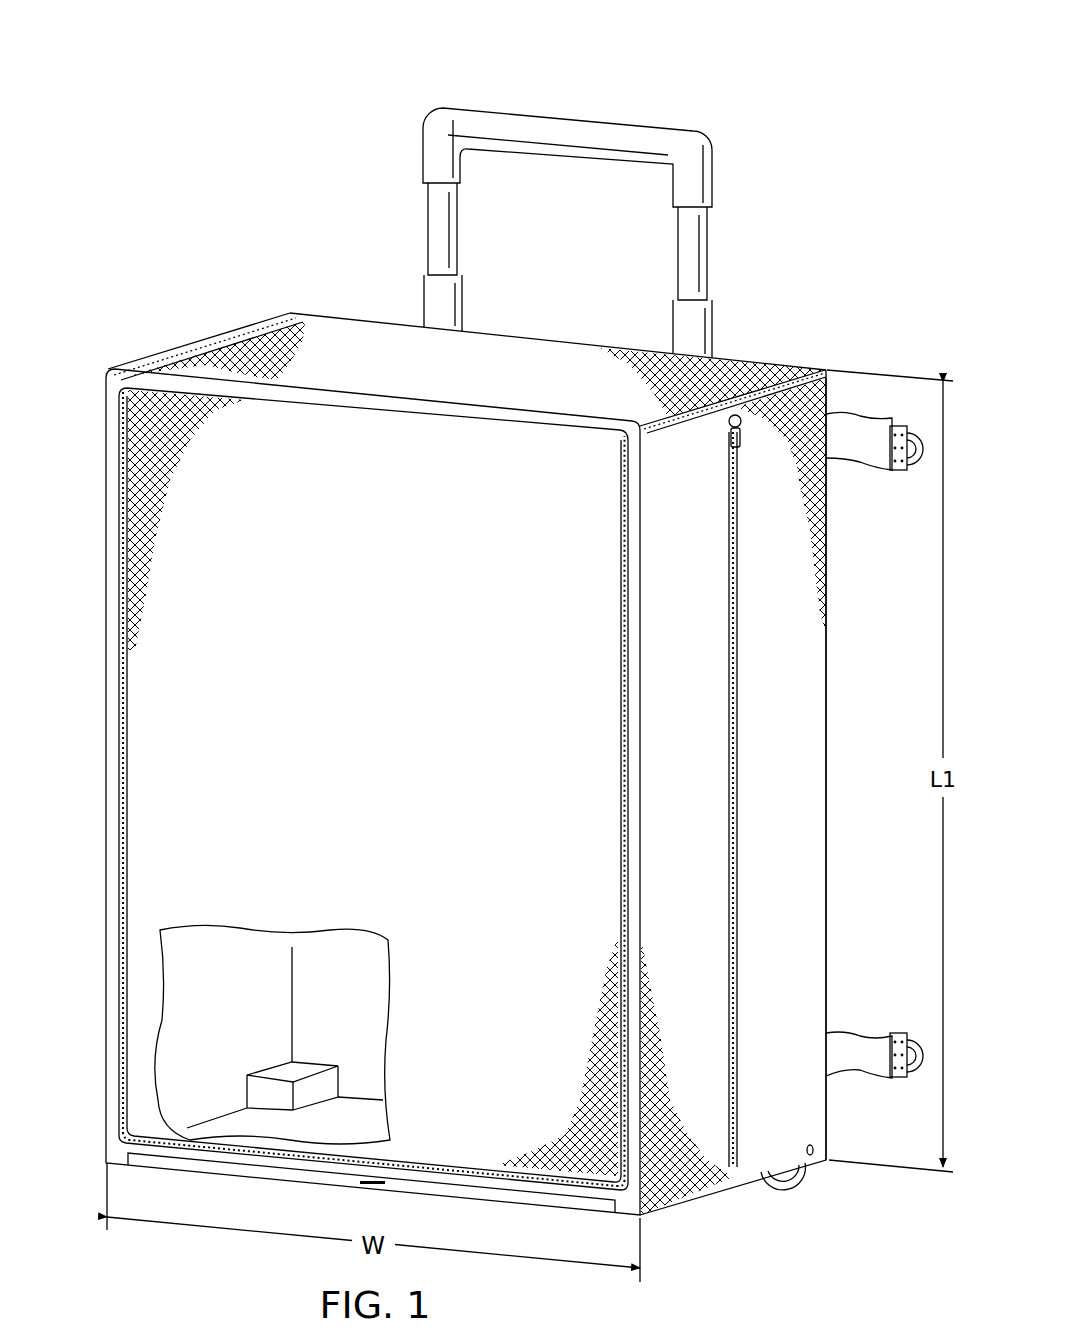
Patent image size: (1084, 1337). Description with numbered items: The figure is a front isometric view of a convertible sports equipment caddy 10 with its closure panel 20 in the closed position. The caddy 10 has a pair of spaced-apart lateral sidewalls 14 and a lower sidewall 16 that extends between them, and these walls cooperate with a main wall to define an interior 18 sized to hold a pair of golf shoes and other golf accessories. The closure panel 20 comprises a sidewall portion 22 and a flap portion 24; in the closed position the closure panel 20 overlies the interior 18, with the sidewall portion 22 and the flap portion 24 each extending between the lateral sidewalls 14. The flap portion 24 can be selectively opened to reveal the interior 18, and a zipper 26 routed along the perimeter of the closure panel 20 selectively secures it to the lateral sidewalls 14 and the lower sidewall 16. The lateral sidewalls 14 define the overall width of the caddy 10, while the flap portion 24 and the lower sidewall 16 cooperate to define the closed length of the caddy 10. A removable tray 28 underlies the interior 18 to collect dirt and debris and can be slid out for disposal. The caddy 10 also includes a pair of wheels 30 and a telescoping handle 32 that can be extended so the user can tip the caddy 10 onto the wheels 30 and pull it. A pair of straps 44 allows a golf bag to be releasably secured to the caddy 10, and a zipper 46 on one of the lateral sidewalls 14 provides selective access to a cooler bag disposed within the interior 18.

The convertible sports equipment caddy 10 is at (207, 53).
The lateral sidewalls 14 is at (112, 415).
The lower sidewall 16 is at (247, 1158).
The interior 18 is at (205, 992).
The closure panel 20 is at (532, 367).
The sidewall portion 22 is at (345, 335).
The flap portion 24 is at (470, 1153).
The zipper 26 is at (120, 602).
The removable tray 28 is at (310, 1177).
The wheels 30 is at (783, 1185).
The telescoping handle 32 is at (570, 107).
The straps 44 is at (857, 465).
The zipper 46 is at (737, 722).